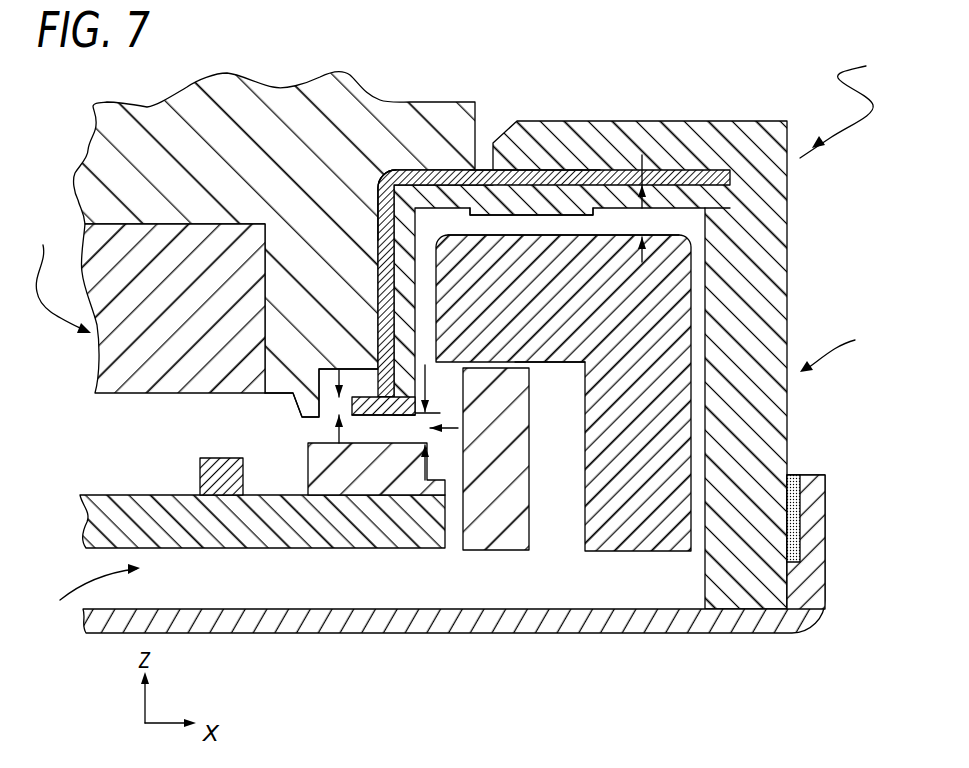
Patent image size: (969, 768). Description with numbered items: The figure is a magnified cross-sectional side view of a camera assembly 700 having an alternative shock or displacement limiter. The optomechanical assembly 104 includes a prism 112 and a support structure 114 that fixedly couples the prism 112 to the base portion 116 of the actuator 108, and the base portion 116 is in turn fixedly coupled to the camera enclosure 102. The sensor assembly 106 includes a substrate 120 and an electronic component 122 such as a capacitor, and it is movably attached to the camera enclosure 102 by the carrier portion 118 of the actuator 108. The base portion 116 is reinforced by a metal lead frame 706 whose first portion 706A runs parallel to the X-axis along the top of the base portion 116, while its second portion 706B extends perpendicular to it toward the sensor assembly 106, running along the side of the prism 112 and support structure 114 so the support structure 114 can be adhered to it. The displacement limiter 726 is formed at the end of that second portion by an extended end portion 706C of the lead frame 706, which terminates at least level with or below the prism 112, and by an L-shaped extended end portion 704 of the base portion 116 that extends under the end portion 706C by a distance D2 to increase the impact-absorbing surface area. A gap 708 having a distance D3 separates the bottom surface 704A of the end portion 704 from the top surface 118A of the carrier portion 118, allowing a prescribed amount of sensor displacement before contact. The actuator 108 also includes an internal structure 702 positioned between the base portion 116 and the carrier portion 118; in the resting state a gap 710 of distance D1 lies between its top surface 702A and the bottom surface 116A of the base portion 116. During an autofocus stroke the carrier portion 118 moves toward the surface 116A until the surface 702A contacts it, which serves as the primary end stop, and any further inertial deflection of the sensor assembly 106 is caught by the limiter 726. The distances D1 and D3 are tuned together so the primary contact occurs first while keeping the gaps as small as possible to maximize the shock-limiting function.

The optomechanical assembly 104 is at (59, 275).
The support structure 114 is at (390, 100).
The prism 112 is at (118, 380).
The base portion 116 is at (788, 237).
The bottom surface 116A is at (528, 218).
The internal structure 702 is at (627, 552).
The top surface 702A is at (613, 233).
The lead frame 706 is at (590, 203).
The first portion 706A is at (484, 168).
The second portion 706B is at (378, 237).
The extended end portion 706C is at (400, 385).
The space or gap 710 is at (647, 215).
The distance D1 is at (647, 165).
The camera assembly 700 is at (851, 107).
The camera enclosure 102 is at (335, 632).
The actuator 108 is at (836, 461).
The sensor assembly 106 is at (82, 610).
The substrate 120 is at (268, 533).
The electronic component 122 is at (212, 458).
The carrier portion 118 is at (483, 552).
The top surface 118A is at (515, 362).
The displacement limiter 726 is at (365, 380).
The extended end portion 704 is at (322, 413).
The bottom surface 704A is at (387, 415).
The gap or space 708 is at (458, 428).
The distance D2 is at (340, 445).
The distance D3 is at (427, 480).